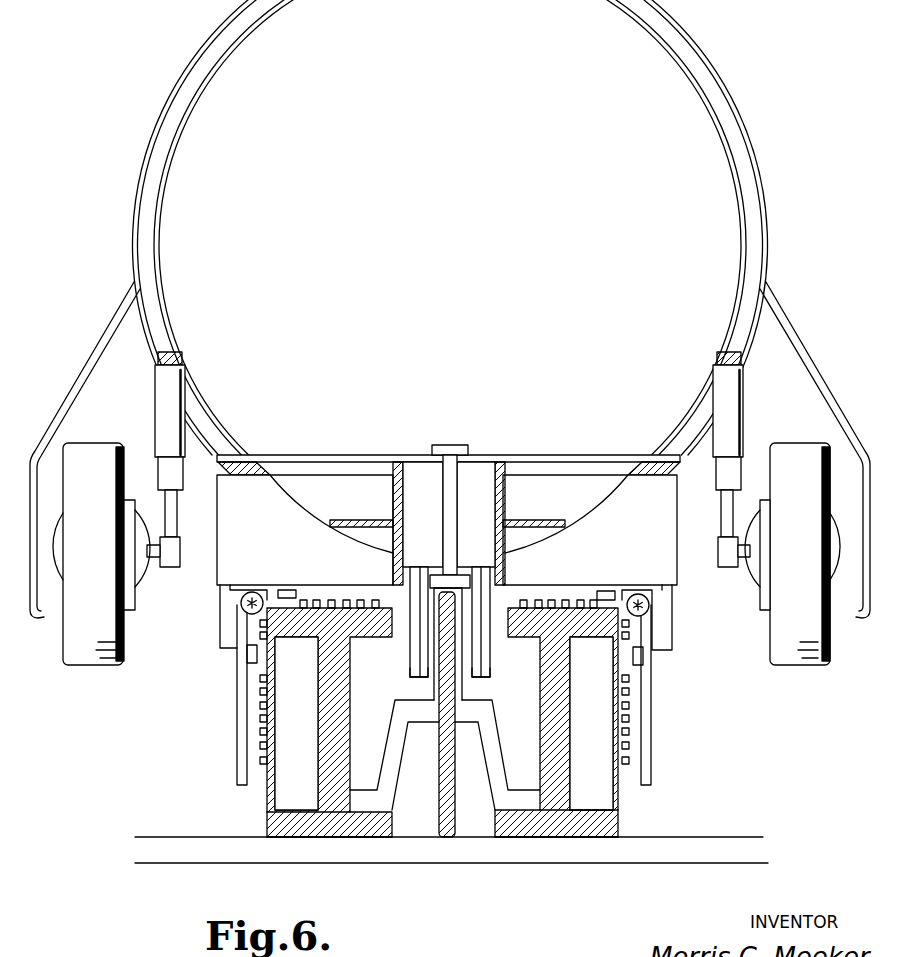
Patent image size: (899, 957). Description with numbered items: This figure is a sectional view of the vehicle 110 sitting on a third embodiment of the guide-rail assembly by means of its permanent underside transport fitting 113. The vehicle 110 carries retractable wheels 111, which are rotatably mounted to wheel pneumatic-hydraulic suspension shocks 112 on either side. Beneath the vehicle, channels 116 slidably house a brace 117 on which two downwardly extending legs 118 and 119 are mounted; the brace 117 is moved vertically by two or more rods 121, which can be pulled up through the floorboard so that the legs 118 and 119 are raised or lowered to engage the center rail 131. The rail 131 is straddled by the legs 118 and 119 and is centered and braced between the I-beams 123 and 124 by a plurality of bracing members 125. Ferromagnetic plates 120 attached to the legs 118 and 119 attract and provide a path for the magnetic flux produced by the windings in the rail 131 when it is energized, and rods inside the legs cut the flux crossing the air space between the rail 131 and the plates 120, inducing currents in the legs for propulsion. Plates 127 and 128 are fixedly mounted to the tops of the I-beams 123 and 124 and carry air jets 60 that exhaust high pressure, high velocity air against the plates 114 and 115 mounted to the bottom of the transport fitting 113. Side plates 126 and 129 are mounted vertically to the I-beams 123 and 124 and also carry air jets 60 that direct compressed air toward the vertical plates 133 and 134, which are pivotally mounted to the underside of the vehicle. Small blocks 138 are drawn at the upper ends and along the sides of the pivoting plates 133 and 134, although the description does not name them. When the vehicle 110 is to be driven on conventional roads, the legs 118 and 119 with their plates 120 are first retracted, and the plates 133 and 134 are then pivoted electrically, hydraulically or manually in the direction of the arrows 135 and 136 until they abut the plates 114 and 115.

The air jets 60 is at (333, 598).
The vehicle 110 is at (350, 253).
The retractable wheels 111 is at (97, 667).
The wheel pneumatic-hydraulic suspension shocks 112 is at (177, 407).
The permanent underside transport fitting 113 is at (733, 700).
The plate 114 is at (375, 562).
The plate 115 is at (630, 587).
The channels 116 is at (392, 493).
The brace 117 is at (424, 560).
The leg 118 is at (412, 677).
The leg 119 is at (483, 676).
The ferromagnetic plates 120 is at (410, 652).
The rods 121 is at (462, 487).
The I-beam 123 is at (336, 827).
The I-beam 124 is at (553, 827).
The bracing members 125 is at (399, 738).
The side plate 126 is at (268, 815).
The plate 127 is at (305, 612).
The plate 128 is at (597, 613).
The side plate 129 is at (620, 822).
The center rail 131 is at (446, 822).
The vertical plate 133 is at (242, 712).
The vertical plate 134 is at (648, 733).
The arrow 135 is at (207, 633).
The arrow 136 is at (690, 600).
The stop block 138 is at (285, 588).